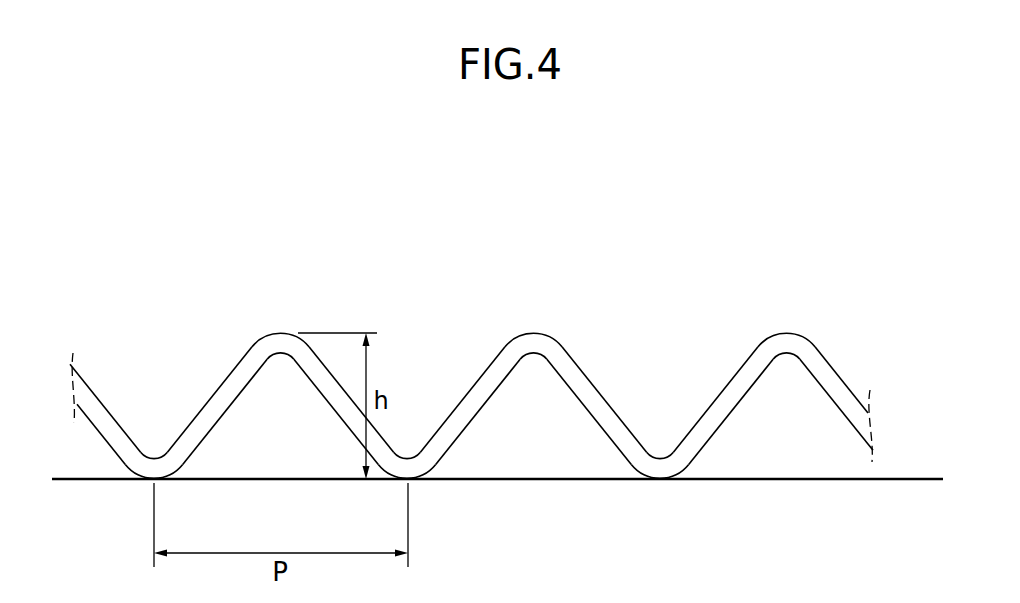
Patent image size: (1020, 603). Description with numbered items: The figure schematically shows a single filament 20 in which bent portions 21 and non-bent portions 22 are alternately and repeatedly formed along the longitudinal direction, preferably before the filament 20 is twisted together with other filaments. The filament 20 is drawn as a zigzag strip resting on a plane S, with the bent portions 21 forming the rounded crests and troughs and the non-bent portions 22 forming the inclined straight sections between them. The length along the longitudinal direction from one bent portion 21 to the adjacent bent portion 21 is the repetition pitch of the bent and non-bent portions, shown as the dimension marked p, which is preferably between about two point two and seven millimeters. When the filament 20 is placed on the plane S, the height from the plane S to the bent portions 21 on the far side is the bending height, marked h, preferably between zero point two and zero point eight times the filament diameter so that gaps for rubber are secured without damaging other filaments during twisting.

The filament 20 is at (471, 418).
The bent portion 21 is at (536, 332).
The non-bent portion 22 is at (602, 428).
The plane S is at (910, 477).